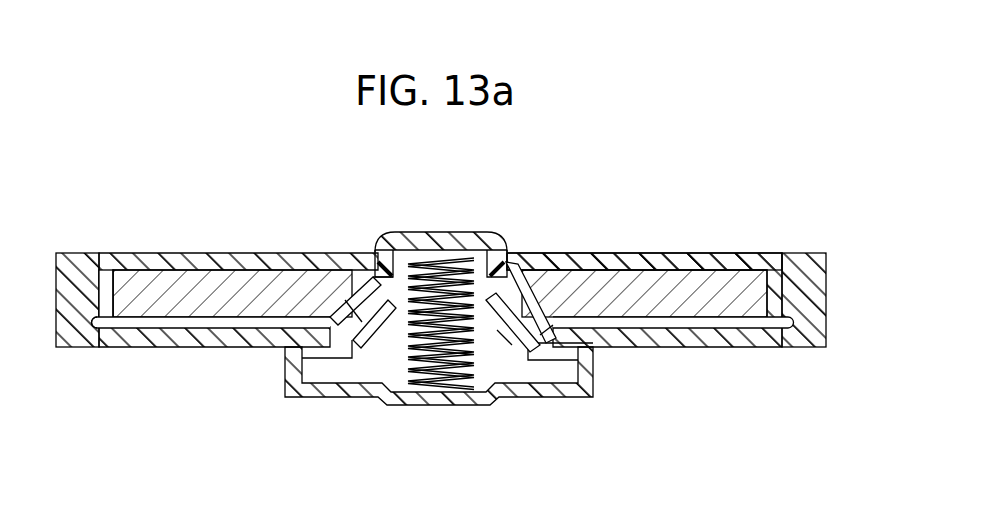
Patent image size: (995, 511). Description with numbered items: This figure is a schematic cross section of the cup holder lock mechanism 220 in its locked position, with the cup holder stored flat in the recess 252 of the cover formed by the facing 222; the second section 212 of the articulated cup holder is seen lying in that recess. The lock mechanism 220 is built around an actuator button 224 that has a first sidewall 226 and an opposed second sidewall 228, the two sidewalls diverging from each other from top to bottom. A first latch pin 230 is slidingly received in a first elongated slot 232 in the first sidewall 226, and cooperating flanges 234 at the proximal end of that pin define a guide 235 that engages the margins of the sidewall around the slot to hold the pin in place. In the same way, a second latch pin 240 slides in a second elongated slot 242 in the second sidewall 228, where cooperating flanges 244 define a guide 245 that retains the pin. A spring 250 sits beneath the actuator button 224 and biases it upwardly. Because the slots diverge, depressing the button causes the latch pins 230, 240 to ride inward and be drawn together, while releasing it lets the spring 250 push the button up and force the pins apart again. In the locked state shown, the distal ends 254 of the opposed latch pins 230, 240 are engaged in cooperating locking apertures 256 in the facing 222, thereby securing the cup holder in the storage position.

The second section 212 is at (200, 323).
The lock mechanism 220 is at (652, 205).
The facing 222 is at (69, 253).
The actuator button 224 is at (458, 237).
The first sidewall 226 is at (352, 268).
The second sidewall 228 is at (523, 360).
The first latch pin 230 is at (234, 256).
The first elongated slot 232 is at (388, 257).
The cooperating flanges 234 is at (342, 308).
The guide 235 is at (363, 322).
The second latch pin 240 is at (682, 323).
The second elongated slot 242 is at (505, 288).
The cooperating flanges 244 is at (497, 335).
The guide 245 is at (523, 315).
The spring 250 is at (438, 373).
The recess 252 is at (103, 253).
The distal ends 254 is at (93, 320).
The locking apertures 256 is at (92, 322).